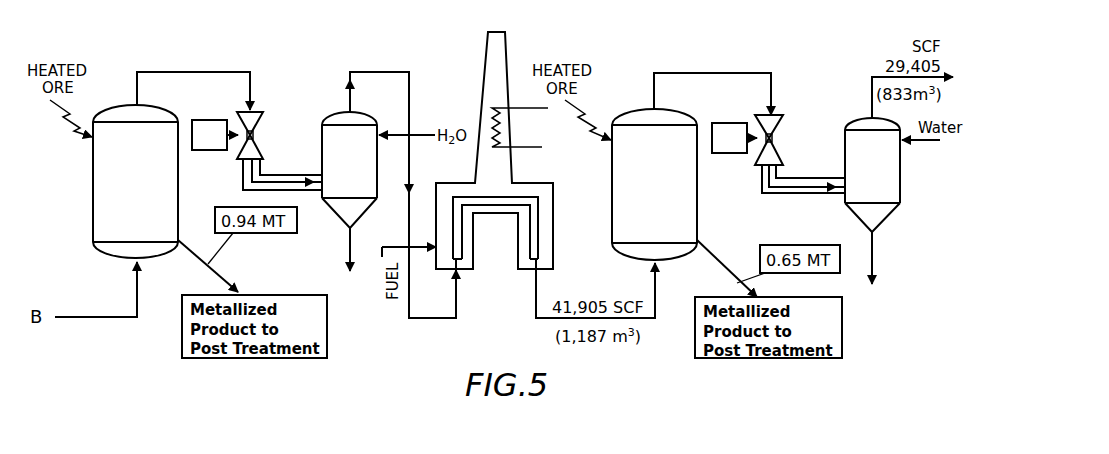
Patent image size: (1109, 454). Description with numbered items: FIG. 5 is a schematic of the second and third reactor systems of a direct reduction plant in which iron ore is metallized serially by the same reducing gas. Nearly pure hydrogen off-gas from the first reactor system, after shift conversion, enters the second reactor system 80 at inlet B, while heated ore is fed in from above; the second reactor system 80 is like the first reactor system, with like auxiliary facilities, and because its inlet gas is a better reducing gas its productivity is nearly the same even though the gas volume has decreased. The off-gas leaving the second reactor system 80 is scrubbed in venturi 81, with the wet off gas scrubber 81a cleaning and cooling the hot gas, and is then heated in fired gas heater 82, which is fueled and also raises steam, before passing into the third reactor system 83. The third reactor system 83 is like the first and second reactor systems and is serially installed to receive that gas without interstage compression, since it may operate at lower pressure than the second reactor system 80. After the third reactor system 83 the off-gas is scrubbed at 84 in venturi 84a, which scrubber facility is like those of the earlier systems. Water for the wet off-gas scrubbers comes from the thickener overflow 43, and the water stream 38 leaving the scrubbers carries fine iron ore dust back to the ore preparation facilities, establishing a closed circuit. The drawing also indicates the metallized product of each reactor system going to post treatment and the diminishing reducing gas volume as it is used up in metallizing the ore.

The second reactor system 80 is at (85, 183).
The venturi 81 is at (255, 132).
The wet off gas scrubber 81a is at (318, 108).
The thickener overflow 43 is at (204, 151).
The water stream 38 is at (348, 236).
The fired gas heater 82 is at (527, 179).
The third reactor system 83 is at (703, 202).
The venturi 84a is at (777, 136).
The scrubbing 84 is at (829, 137).